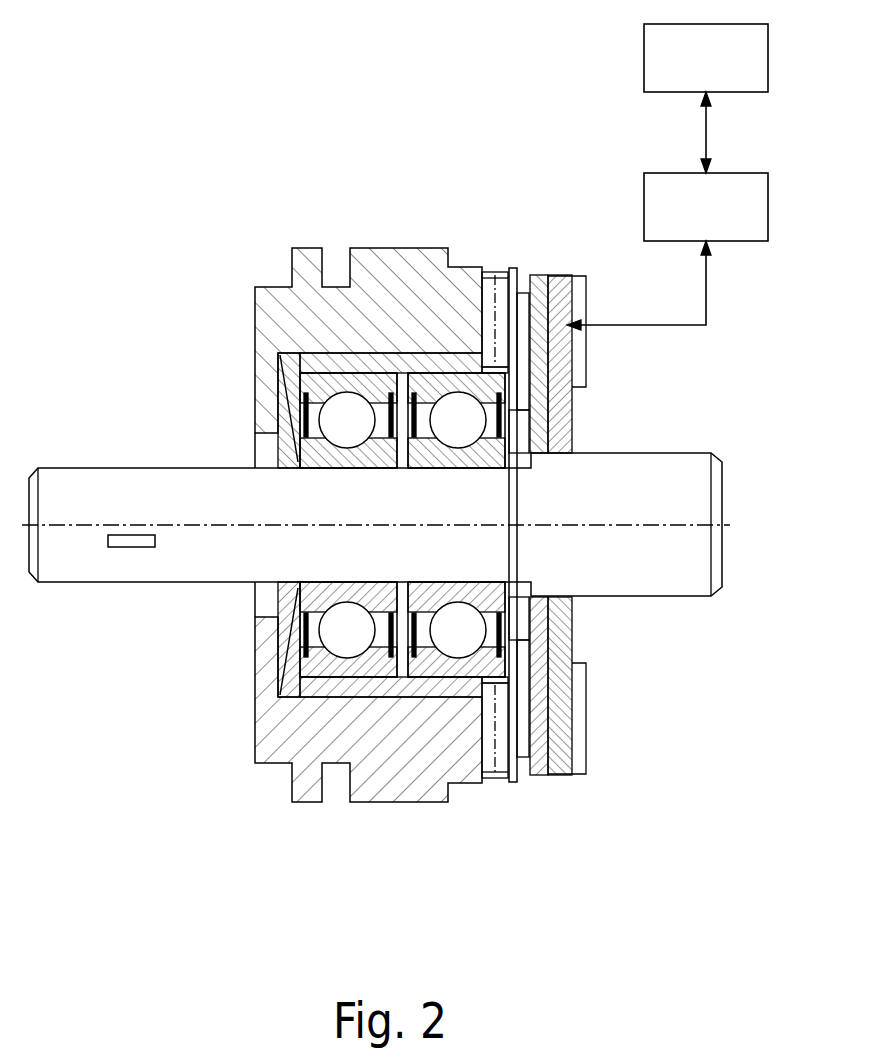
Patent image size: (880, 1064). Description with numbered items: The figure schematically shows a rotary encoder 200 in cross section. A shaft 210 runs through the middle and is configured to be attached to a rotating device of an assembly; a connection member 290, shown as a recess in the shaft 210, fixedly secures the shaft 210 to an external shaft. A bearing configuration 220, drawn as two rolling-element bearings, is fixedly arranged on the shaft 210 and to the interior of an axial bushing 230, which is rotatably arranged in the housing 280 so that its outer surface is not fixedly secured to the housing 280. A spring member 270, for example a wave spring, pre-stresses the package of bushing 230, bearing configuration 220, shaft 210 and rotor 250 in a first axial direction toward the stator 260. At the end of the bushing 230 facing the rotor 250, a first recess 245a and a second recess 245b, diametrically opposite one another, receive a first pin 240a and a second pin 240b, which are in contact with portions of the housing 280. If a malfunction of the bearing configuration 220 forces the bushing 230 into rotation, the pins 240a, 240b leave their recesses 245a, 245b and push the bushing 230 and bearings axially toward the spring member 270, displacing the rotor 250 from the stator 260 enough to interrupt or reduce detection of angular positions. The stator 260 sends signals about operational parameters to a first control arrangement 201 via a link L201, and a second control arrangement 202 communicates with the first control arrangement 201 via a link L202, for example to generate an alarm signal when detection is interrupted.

The rotary encoder 200 is at (178, 100).
The shaft 210 is at (97, 500).
The bearing configuration 220 is at (447, 380).
The bushing 230 is at (457, 368).
The first pin 240a is at (488, 292).
The second pin 240b is at (500, 756).
The first recess 245a is at (492, 373).
The second recess 245b is at (488, 677).
The rotor 250 is at (535, 310).
The stator 260 is at (563, 358).
The spring member 270 is at (296, 416).
The housing 280 is at (296, 286).
The connection member 290 is at (128, 548).
The first control arrangement 201 is at (706, 207).
The second control arrangement 202 is at (706, 58).
The link L201 is at (707, 325).
The link L202 is at (706, 132).